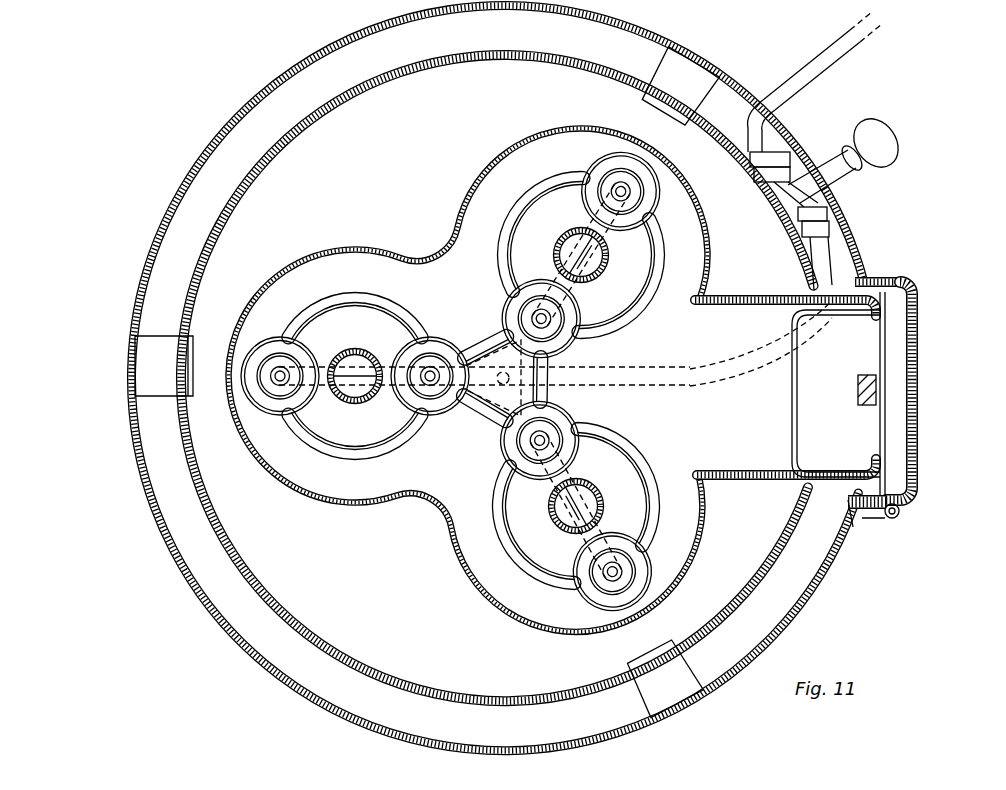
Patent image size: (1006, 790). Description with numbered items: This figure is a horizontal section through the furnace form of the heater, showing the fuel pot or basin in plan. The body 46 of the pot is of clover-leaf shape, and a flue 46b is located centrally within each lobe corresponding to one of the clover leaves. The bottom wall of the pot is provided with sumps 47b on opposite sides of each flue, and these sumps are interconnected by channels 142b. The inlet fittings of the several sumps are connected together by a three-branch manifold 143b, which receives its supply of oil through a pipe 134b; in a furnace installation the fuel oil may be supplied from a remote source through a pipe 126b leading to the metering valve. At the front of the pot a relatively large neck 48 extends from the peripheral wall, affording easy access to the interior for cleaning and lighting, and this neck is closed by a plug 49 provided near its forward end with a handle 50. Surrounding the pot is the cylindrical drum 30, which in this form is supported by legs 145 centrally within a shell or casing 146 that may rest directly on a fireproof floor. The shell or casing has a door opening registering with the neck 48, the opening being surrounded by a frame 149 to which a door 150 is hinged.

The shell or casing 146 is at (242, 112).
The cylindrical drum 30 is at (416, 66).
The legs 145 is at (140, 370).
The body of the fuel pot or basin 46 is at (361, 247).
The sumps 47b is at (274, 402).
The flues 46b is at (357, 349).
The three-branch manifold 143b is at (362, 378).
The channels 142b is at (487, 345).
The neck 48 is at (767, 462).
The plug 49 is at (795, 383).
The handle 50 is at (857, 382).
The frame 149 is at (887, 297).
The door 150 is at (917, 438).
The pipe 134b is at (727, 377).
The pipe 126b is at (817, 73).